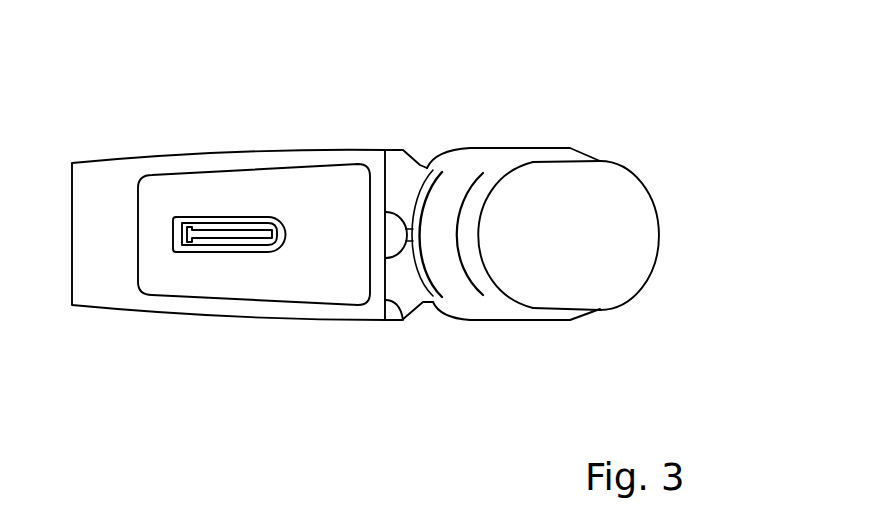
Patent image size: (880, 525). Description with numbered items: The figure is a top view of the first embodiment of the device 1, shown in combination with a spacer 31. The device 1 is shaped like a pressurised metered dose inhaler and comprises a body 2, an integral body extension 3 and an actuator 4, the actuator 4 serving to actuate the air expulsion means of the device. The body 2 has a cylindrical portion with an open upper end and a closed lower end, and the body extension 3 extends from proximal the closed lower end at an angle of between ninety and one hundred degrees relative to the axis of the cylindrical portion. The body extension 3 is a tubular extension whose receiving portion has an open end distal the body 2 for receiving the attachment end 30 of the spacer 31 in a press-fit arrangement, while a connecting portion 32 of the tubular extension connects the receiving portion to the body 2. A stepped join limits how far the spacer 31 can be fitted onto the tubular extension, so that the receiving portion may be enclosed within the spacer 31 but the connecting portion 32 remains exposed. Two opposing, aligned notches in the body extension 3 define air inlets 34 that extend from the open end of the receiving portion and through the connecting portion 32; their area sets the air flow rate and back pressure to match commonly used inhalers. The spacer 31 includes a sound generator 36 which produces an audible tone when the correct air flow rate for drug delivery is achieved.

The device 1 is at (625, 122).
The body 2 is at (492, 333).
The body extension 3 is at (410, 140).
The actuator 4 is at (667, 220).
The attachment end 30 is at (403, 320).
The spacer 31 is at (241, 317).
The connecting portion 32 is at (408, 167).
The air inlet 34 is at (385, 210).
The sound generator 36 is at (215, 235).